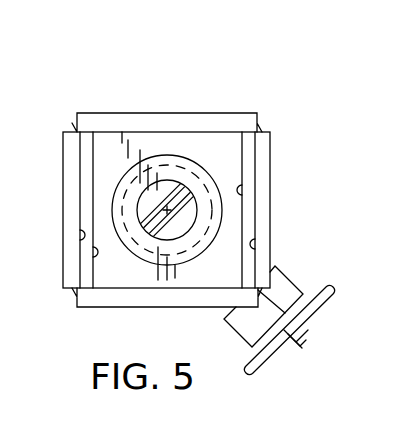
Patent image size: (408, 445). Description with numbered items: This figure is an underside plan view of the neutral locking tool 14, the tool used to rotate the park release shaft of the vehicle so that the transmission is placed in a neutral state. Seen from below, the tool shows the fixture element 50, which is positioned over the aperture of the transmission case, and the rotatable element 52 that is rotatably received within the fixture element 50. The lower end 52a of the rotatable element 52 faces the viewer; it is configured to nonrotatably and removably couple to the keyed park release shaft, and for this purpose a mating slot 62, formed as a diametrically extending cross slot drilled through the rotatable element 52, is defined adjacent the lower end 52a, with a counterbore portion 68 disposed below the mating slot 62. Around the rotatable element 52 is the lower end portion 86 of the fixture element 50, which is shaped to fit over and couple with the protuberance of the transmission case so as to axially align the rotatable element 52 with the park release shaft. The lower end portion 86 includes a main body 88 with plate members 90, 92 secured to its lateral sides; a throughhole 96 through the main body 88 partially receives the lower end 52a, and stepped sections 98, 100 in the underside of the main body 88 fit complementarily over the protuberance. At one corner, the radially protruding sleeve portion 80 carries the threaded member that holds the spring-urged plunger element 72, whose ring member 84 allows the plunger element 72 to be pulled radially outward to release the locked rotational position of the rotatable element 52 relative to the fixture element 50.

The neutral locking tool 14 is at (188, 68).
The fixture element 50 is at (269, 104).
The rotatable element 52 is at (104, 201).
The lower end 52a is at (160, 157).
The mating slot 62 is at (187, 186).
The counterbore portion 68 is at (178, 215).
The plunger element 72 is at (299, 347).
The sleeve portion 80 is at (277, 270).
The ring member 84 is at (262, 358).
The lower end portion 86 is at (62, 146).
The main body 88 is at (265, 158).
The plate member 90 is at (122, 124).
The plate member 92 is at (112, 298).
The throughhole 96 is at (186, 288).
The stepped section 98 is at (258, 243).
The stepped section 100 is at (245, 189).